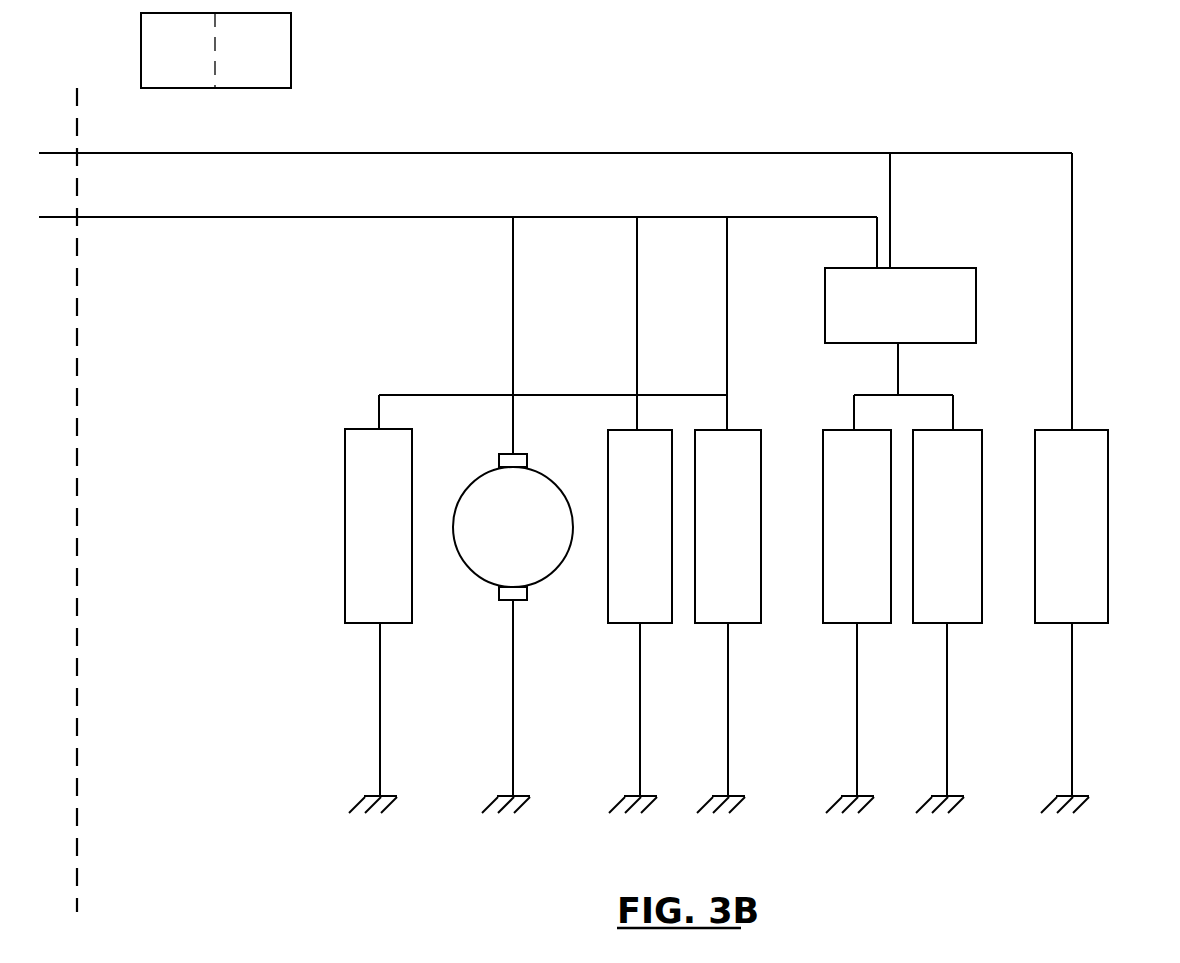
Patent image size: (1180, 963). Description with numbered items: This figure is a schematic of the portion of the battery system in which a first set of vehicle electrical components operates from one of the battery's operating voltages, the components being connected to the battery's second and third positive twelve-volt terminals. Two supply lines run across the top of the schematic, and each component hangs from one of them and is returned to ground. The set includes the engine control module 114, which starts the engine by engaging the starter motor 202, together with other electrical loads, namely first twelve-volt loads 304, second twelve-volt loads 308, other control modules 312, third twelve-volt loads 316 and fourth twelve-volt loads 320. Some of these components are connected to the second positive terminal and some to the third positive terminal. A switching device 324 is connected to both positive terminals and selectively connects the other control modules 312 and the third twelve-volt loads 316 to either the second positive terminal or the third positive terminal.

The engine control module (ECM) 114 is at (360, 429).
The starter motor 202 is at (490, 472).
The first 12 V loads 304 is at (607, 462).
The second 12 V loads 308 is at (761, 445).
The other control modules 312 is at (823, 480).
The third 12 V loads 316 is at (973, 430).
The fourth 12 V loads 320 is at (1108, 447).
The switching device 324 is at (932, 268).